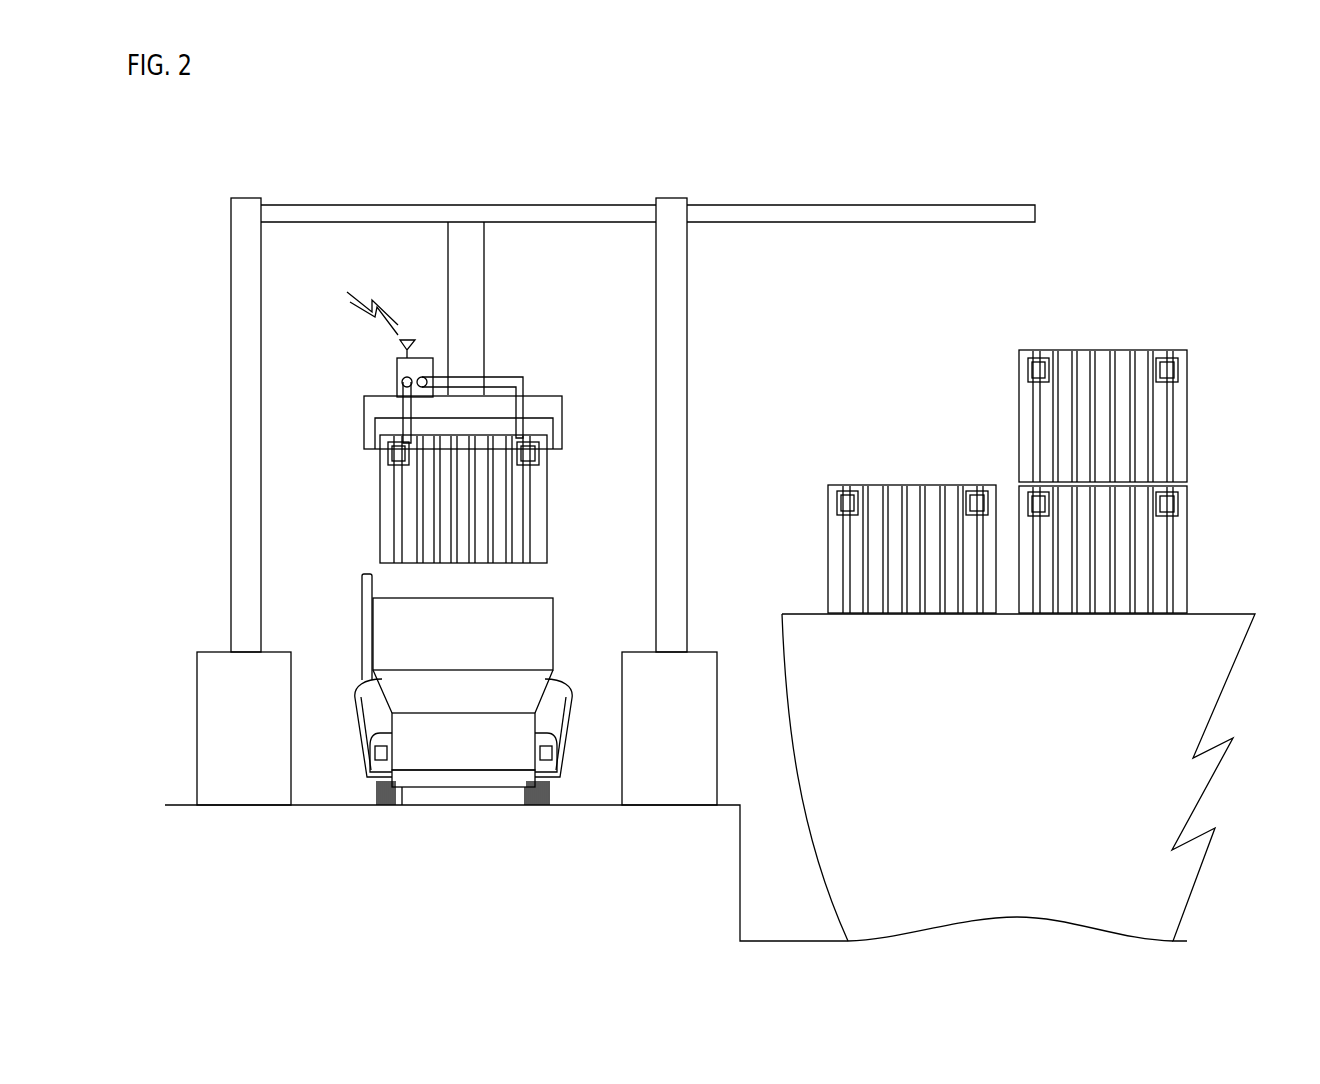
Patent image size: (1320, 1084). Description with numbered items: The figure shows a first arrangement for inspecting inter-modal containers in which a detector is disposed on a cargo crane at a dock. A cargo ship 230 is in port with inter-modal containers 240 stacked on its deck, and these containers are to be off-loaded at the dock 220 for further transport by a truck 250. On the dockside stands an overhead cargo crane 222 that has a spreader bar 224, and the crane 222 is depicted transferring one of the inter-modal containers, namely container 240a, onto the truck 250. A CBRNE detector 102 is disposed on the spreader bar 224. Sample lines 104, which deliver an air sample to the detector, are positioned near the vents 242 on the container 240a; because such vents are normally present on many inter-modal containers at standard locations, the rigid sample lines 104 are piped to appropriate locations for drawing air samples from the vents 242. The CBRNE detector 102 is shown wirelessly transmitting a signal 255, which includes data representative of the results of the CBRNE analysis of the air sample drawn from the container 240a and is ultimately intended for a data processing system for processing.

The overhead cargo crane 222 is at (509, 170).
The signal 255 is at (359, 285).
The CBRNE detector 102 is at (397, 375).
The sample lines 104 is at (515, 378).
The spreader bar 224 is at (562, 440).
The vents 242 is at (392, 458).
The container 240a is at (547, 527).
The inter-modal containers 240 is at (930, 340).
The truck 250 is at (470, 742).
The dock 220 is at (485, 871).
The cargo ship 230 is at (1013, 769).